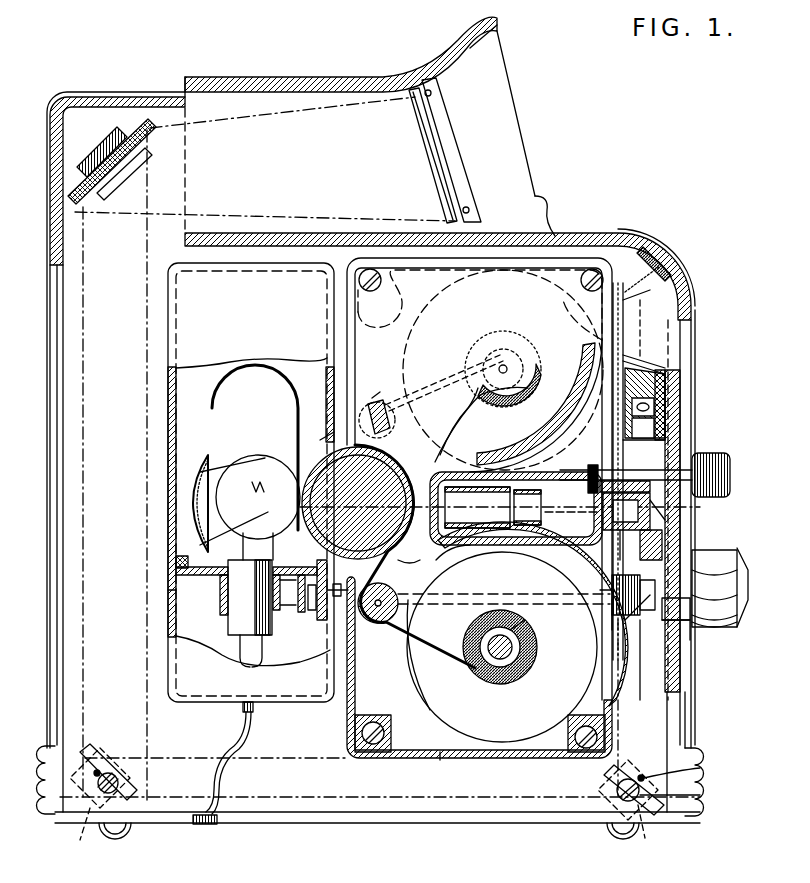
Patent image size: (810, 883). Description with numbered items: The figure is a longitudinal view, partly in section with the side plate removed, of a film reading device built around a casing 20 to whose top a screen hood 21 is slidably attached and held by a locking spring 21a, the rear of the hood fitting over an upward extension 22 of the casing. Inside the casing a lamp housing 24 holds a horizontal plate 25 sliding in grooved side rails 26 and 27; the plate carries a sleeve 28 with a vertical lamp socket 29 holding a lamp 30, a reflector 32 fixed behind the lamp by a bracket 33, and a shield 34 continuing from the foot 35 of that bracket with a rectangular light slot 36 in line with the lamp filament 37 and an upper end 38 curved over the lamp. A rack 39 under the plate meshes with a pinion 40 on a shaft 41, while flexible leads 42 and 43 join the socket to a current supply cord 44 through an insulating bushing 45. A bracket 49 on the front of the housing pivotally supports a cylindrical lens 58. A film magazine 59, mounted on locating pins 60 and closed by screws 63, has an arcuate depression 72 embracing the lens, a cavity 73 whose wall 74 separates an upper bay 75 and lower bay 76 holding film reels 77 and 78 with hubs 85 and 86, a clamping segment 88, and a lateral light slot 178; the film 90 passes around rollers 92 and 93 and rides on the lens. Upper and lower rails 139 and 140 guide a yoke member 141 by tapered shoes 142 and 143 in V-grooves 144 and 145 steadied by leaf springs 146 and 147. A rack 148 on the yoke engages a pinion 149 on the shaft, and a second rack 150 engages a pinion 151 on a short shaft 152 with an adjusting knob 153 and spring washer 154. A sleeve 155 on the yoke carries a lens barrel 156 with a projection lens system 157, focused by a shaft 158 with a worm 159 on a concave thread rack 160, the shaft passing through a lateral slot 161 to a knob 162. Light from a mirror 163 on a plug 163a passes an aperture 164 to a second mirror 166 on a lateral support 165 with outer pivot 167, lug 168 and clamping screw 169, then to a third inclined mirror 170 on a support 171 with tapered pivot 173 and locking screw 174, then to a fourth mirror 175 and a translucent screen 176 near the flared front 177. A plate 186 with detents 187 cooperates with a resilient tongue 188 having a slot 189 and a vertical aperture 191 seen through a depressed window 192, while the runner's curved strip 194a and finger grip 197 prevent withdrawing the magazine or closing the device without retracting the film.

The casing 20 is at (292, 815).
The screen hood 21 is at (325, 77).
The locking spring 21a is at (531, 208).
The upward extension 22 is at (140, 97).
The lamp housing 24 is at (282, 702).
The horizontal plate 25 is at (196, 578).
The grooved side rail 26 is at (318, 562).
The grooved side rail 27 is at (168, 594).
The sleeve 28 is at (288, 606).
The lamp socket 29 is at (228, 628).
The lamp 30 is at (250, 462).
The reflector 32 is at (200, 470).
The bracket 33 is at (176, 560).
The shield 34 is at (294, 424).
The foot 35 is at (214, 575).
The rectangular light slot 36 is at (325, 476).
The lamp filament 37 is at (250, 500).
The upper end 38 is at (270, 360).
The rack 39 is at (298, 590).
The pinion 40 is at (311, 612).
The shaft 41 is at (340, 598).
The flexible lead 42 is at (238, 650).
The flexible lead 43 is at (265, 650).
The current supply cord 44 is at (240, 742).
The insulating bushing 45 is at (242, 706).
The bracket 49 is at (326, 428).
The cylindrical lens 58 is at (395, 450).
The film magazine 59 is at (347, 700).
The locating pin 60 is at (378, 722).
The screw 63 is at (382, 280).
The arcuate depression 72 is at (412, 560).
The cavity 73 is at (455, 490).
The wall 74 is at (458, 548).
The upper bay 75 is at (455, 428).
The lower bay 76 is at (442, 758).
The film reel 77 is at (440, 290).
The film reel 78 is at (518, 742).
The hub 85 is at (538, 378).
The hub 86 is at (537, 650).
The segment 88 is at (518, 628).
The film 90 is at (402, 640).
The roller 92 is at (406, 388).
The roller 93 is at (386, 596).
The upper rail 139 is at (656, 402).
The lower rail 140 is at (612, 618).
The yoke member 141 is at (660, 440).
The upper tapered shoe 142 is at (650, 408).
The lower tapered shoe 143 is at (630, 622).
The V-groove 144 is at (654, 425).
The V-groove 145 is at (610, 600).
The leaf spring 146 is at (670, 385).
The leaf spring 147 is at (648, 640).
The rack 148 is at (614, 575).
The pinion 149 is at (612, 585).
The second rack 150 is at (662, 540).
The pinion 151 is at (690, 560).
The short shaft 152 is at (680, 620).
The adjusting knob 153 is at (742, 568).
The spring washer 154 is at (686, 640).
The sleeve 155 is at (560, 556).
The lens barrel 156 is at (525, 490).
The projection lens system 157 is at (488, 495).
The shaft 158 is at (630, 480).
The worm 159 is at (612, 452).
The concave thread rack 160 is at (548, 455).
The lateral slot 161 is at (680, 468).
The knob 162 is at (728, 458).
The mirror 163 is at (612, 508).
The plug 163a is at (655, 505).
The aperture 164 is at (622, 535).
The lateral support 165 is at (642, 822).
The second mirror 166 is at (641, 775).
The outer pivot 167 is at (612, 793).
The lug 168 is at (702, 793).
The clamping screw 169 is at (700, 768).
The third inclined mirror 170 is at (86, 752).
The support 171 is at (84, 820).
The tapered pivot 173 is at (120, 784).
The locking screw 174 is at (97, 770).
The fourth mirror 175 is at (80, 204).
The translucent screen 176 is at (437, 145).
The flared front 177 is at (478, 46).
The lateral light slot 178 is at (460, 460).
The plate 186 is at (618, 282).
The detent 187 is at (650, 365).
The resilient tongue 188 is at (648, 268).
The slot 189 is at (630, 378).
The vertical aperture 191 is at (625, 320).
The depressed window 192 is at (648, 312).
The curved strip 194a is at (380, 392).
The finger grip 197 is at (375, 402).